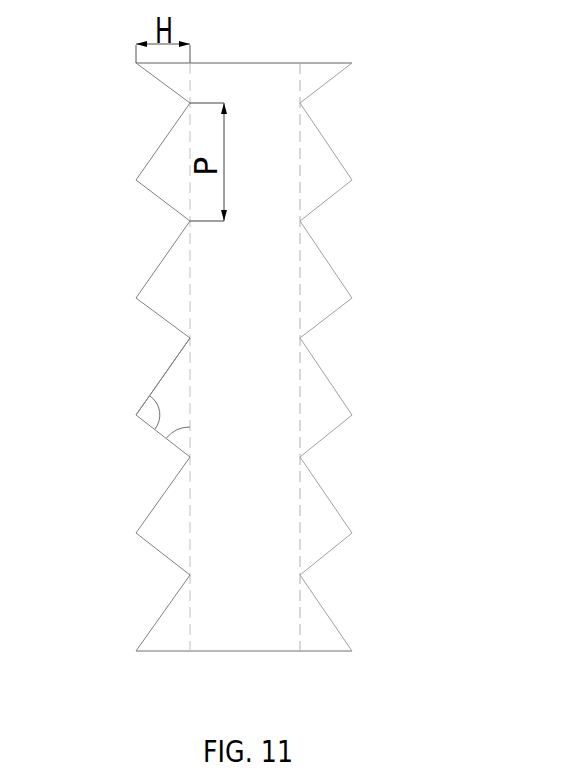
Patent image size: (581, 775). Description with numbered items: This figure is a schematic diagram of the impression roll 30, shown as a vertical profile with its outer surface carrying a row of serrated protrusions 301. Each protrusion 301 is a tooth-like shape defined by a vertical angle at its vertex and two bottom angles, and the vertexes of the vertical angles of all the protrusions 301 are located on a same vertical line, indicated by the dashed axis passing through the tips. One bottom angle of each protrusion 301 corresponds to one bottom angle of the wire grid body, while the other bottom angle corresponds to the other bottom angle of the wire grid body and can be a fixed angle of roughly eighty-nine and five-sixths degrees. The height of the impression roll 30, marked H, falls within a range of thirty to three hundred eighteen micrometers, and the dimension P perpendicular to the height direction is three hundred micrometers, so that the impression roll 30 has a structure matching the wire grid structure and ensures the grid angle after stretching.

The impression roll 30 is at (249, 301).
The serrated protrusion 301 is at (168, 288).